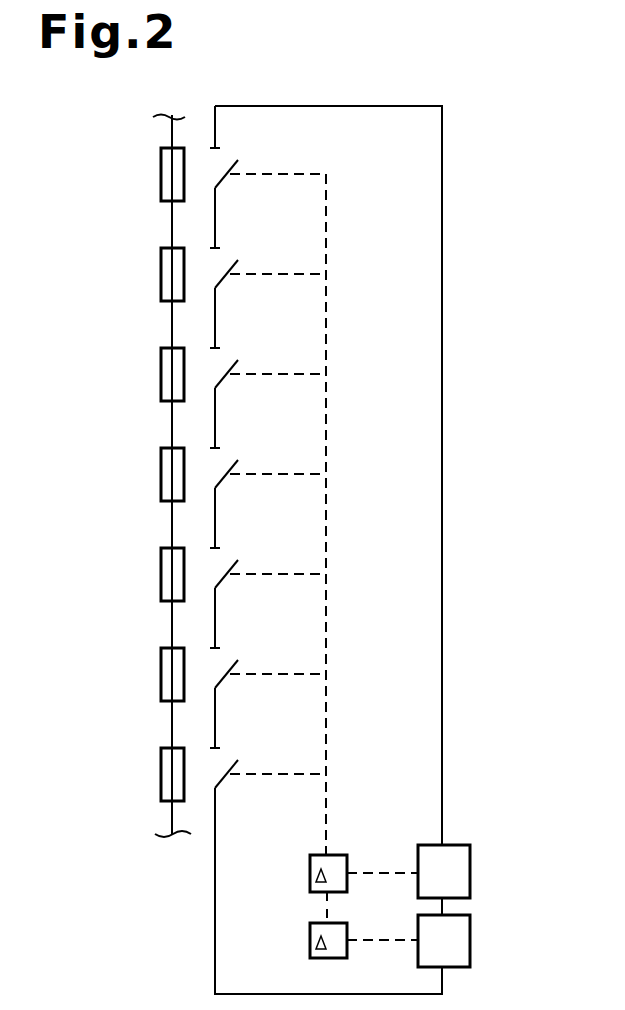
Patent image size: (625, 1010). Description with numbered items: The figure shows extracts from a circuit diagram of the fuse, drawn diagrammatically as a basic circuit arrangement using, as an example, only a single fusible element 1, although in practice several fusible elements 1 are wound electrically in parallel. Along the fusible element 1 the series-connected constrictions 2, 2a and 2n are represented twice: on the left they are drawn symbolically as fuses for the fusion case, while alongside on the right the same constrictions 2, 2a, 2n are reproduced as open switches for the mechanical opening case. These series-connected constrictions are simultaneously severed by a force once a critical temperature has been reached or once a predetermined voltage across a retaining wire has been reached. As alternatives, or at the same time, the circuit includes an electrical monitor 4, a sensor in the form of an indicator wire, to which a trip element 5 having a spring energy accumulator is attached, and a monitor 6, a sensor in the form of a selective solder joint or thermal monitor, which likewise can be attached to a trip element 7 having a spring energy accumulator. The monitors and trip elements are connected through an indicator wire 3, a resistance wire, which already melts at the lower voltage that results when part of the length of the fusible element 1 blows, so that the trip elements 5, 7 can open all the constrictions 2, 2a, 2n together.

The fusible element 1 is at (172, 826).
The constriction 2 is at (233, 163).
The constriction 2a is at (162, 278).
The constriction 2n is at (163, 775).
The indicator wire 3 is at (441, 450).
The electrical monitor 4 is at (470, 868).
The trip element 5 is at (310, 872).
The monitor 6 is at (470, 945).
The trip element 7 is at (310, 938).